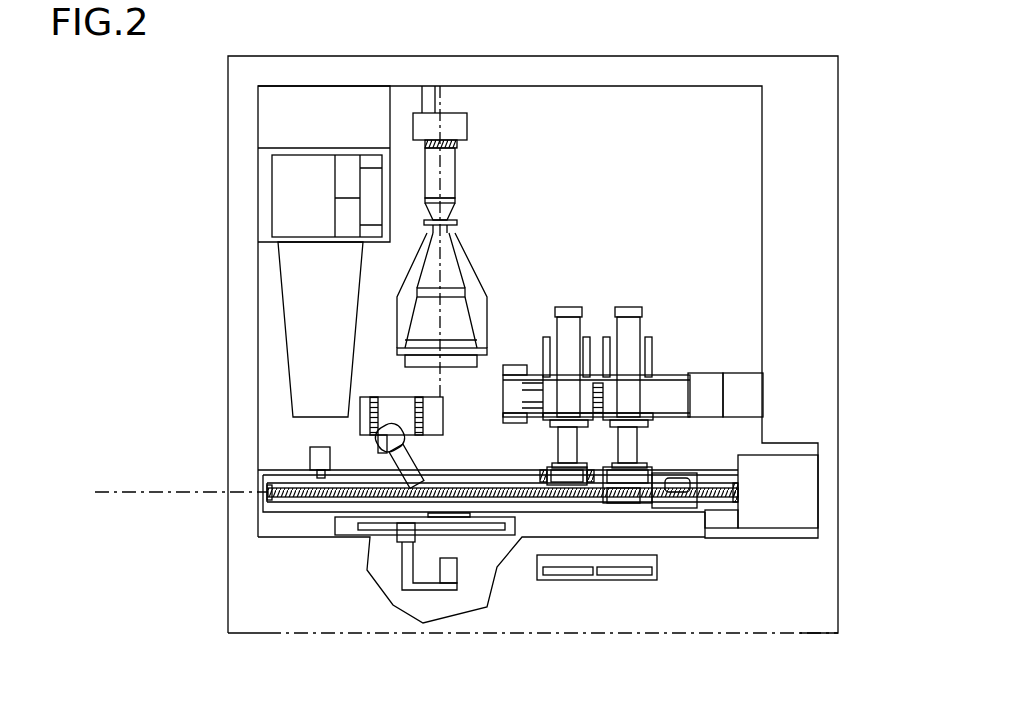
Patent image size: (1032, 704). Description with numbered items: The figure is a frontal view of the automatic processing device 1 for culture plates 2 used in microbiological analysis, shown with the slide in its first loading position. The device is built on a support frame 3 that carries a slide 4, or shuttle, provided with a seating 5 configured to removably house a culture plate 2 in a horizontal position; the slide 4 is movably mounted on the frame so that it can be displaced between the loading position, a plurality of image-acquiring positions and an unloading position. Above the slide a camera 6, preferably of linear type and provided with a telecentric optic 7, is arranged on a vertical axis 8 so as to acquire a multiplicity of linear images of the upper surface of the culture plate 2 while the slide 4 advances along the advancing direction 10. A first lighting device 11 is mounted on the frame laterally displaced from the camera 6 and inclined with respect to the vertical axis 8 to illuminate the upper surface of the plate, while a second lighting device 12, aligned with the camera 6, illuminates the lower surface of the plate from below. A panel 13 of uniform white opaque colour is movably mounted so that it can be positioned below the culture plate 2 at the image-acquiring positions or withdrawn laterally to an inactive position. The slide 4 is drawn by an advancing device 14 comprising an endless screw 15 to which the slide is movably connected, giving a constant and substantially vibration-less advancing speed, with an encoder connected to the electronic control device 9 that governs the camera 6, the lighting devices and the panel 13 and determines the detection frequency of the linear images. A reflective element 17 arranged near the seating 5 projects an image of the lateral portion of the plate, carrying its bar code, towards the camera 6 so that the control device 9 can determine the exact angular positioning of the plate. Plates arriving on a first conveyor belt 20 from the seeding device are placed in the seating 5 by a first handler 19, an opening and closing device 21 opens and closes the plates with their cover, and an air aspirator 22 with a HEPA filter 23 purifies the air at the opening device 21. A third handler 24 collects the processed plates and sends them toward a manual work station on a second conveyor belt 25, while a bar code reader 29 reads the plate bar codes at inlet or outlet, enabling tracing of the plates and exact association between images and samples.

The automatic processing device 1 is at (585, 213).
The culture plate 2 is at (540, 477).
The support frame 3 is at (287, 538).
The slide 4 is at (608, 480).
The seating 5 is at (572, 497).
The camera 6 is at (458, 187).
The optic 7 is at (447, 260).
The vertical axis 8 is at (460, 330).
The electronic control device 9 is at (787, 505).
The advancing direction 10 is at (113, 493).
The first lighting device 11 is at (400, 486).
The second lighting device 12 is at (457, 580).
The panel 13 is at (440, 515).
The advancing device 14 is at (700, 482).
The endless screw 15 is at (292, 490).
The reflective element 17 is at (578, 477).
The first handler 19 is at (545, 463).
The first conveyor belt 20 is at (568, 573).
The opening and/or closing device 21 is at (320, 450).
The air aspirator 22 is at (304, 317).
The filter 23 is at (303, 190).
The third handler 24 is at (605, 457).
The second conveyor belt 25 is at (635, 572).
The bar code reader 29 is at (723, 523).